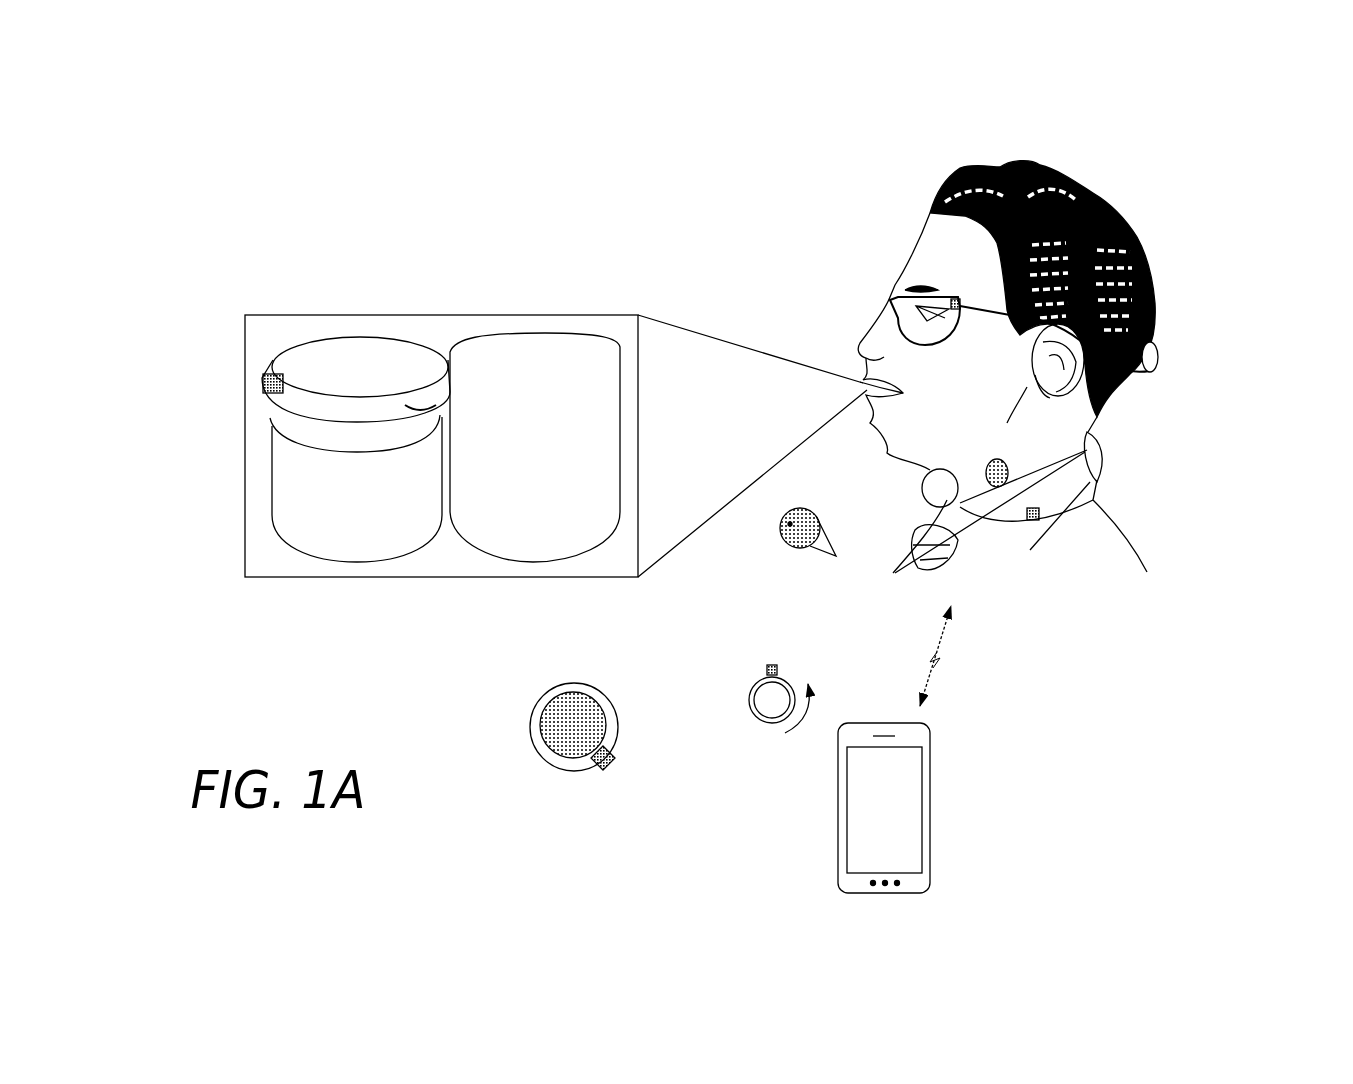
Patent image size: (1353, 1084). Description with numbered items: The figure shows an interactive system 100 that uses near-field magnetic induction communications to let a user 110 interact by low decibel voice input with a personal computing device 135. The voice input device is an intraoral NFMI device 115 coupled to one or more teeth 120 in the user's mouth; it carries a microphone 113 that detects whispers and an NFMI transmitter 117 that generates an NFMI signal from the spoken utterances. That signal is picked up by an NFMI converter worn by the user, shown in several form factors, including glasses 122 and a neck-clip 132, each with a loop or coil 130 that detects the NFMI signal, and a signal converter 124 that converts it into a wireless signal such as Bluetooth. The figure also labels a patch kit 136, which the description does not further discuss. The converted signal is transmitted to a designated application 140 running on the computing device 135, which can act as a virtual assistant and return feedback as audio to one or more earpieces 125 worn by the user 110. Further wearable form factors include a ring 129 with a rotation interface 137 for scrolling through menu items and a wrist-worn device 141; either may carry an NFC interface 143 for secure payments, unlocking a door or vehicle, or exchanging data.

The interactive system 100 is at (692, 125).
The user 110 is at (1005, 140).
The microphone 113 is at (260, 366).
The intraoral NFMI device 115 is at (356, 449).
The NFMI transmitter 117 is at (417, 404).
The teeth 120 is at (207, 560).
The glasses 122 is at (879, 290).
The signal converter 124 is at (1212, 627).
The earpieces 125 is at (1026, 361).
The ring 129 is at (762, 735).
The loop or coil 130 is at (1108, 446).
The neck-clip 132 is at (1096, 483).
The computing device 135 is at (905, 863).
The patch kit 136 is at (1005, 478).
The rotation interface 137 is at (795, 739).
The designated application 140 is at (930, 883).
The wrist-worn device 141 is at (641, 741).
The NFC interface 143 is at (610, 745).